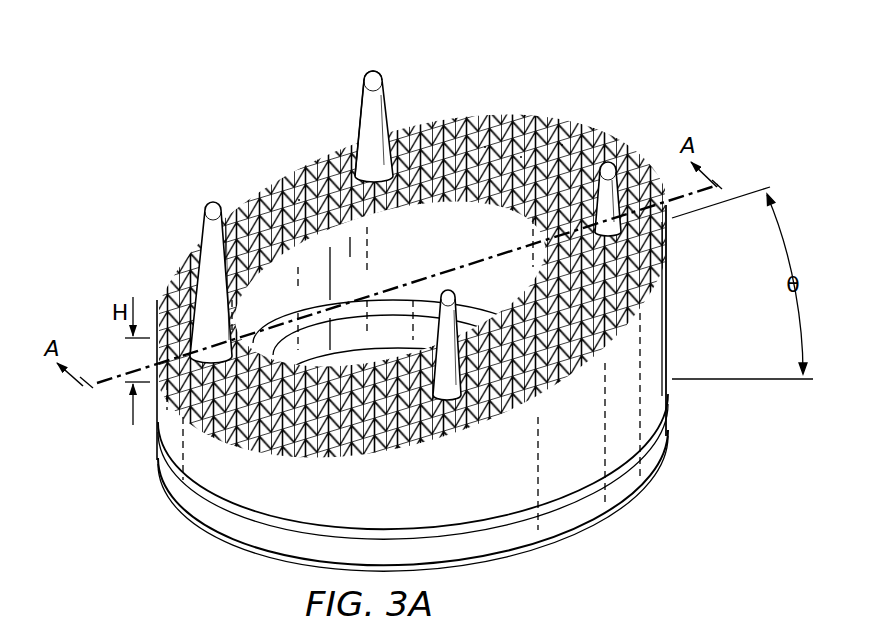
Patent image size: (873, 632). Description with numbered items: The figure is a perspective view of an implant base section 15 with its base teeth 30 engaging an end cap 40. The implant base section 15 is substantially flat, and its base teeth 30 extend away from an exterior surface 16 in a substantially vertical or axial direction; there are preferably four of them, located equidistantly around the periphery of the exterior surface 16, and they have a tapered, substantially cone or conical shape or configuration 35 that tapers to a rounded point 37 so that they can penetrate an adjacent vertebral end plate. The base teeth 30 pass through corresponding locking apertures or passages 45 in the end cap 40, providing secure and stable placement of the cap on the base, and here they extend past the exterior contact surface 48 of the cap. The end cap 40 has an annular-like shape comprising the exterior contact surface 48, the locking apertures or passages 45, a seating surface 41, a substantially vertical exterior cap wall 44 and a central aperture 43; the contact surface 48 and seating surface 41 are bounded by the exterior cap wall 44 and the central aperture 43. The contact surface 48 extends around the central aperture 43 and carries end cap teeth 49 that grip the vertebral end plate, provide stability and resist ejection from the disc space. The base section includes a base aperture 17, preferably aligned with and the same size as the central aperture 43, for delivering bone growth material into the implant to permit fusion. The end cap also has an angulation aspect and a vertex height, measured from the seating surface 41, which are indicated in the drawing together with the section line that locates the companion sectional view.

The end cap 40 is at (266, 97).
The rounded tip of spike 37 is at (373, 66).
The base teeth 30 is at (199, 228).
The cone or conical shape or configuration 35 is at (359, 118).
The central aperture 43 is at (318, 212).
The exterior contact surface 48 is at (486, 147).
The locking apertures or passages 45 is at (522, 157).
The end cap teeth 49 is at (563, 145).
The base aperture 17 is at (408, 333).
The vertical exterior cap wall 44 is at (667, 318).
The implant base section 15 is at (567, 520).
The seating surface 41 is at (525, 513).
The exterior surface 16 is at (508, 510).